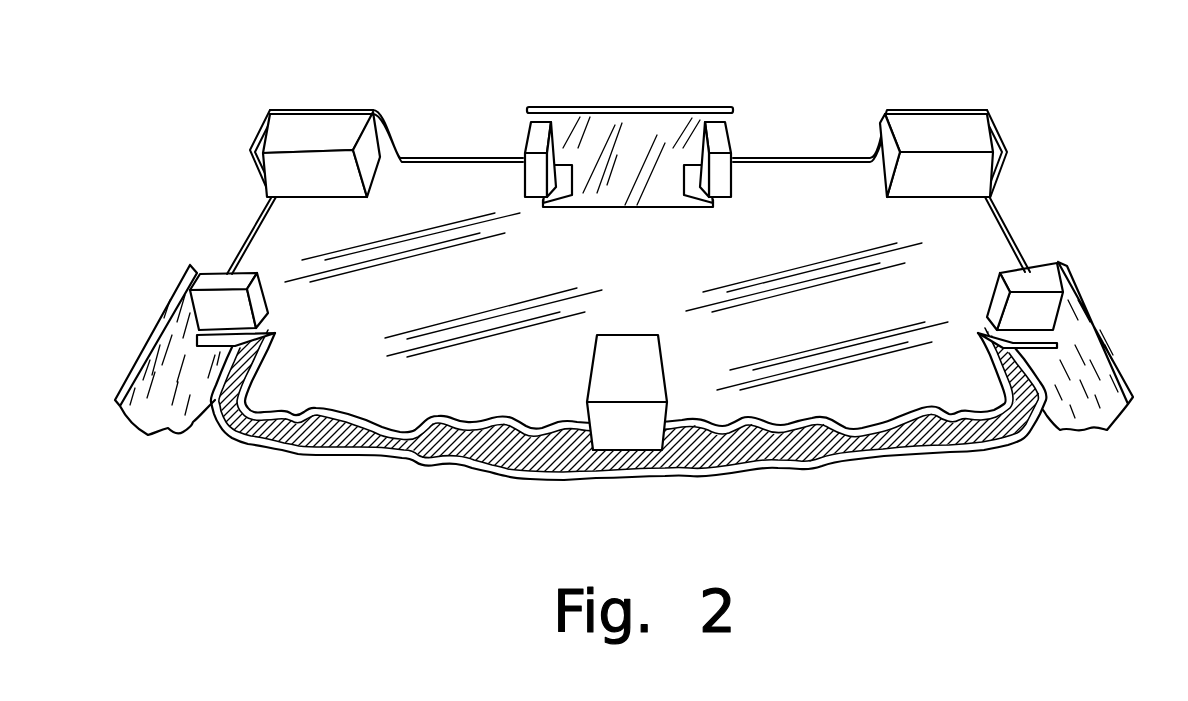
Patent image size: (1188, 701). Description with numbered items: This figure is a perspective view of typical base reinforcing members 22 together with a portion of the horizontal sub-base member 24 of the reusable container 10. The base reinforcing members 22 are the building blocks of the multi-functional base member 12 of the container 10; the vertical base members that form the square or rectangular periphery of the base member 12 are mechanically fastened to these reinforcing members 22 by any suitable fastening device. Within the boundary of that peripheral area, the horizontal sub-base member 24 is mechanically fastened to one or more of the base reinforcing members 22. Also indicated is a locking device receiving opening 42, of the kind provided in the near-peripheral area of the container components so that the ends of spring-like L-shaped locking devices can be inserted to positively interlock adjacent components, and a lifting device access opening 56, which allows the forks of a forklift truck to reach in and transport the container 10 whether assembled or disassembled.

The reusable container 10 is at (160, 141).
The multi-functional base member 12 is at (992, 122).
The base reinforcing members 22 is at (297, 130).
The horizontal sub-base member 24 is at (985, 257).
The locking device receiving opening 42 is at (617, 187).
The lifting device access opening 56 is at (434, 118).